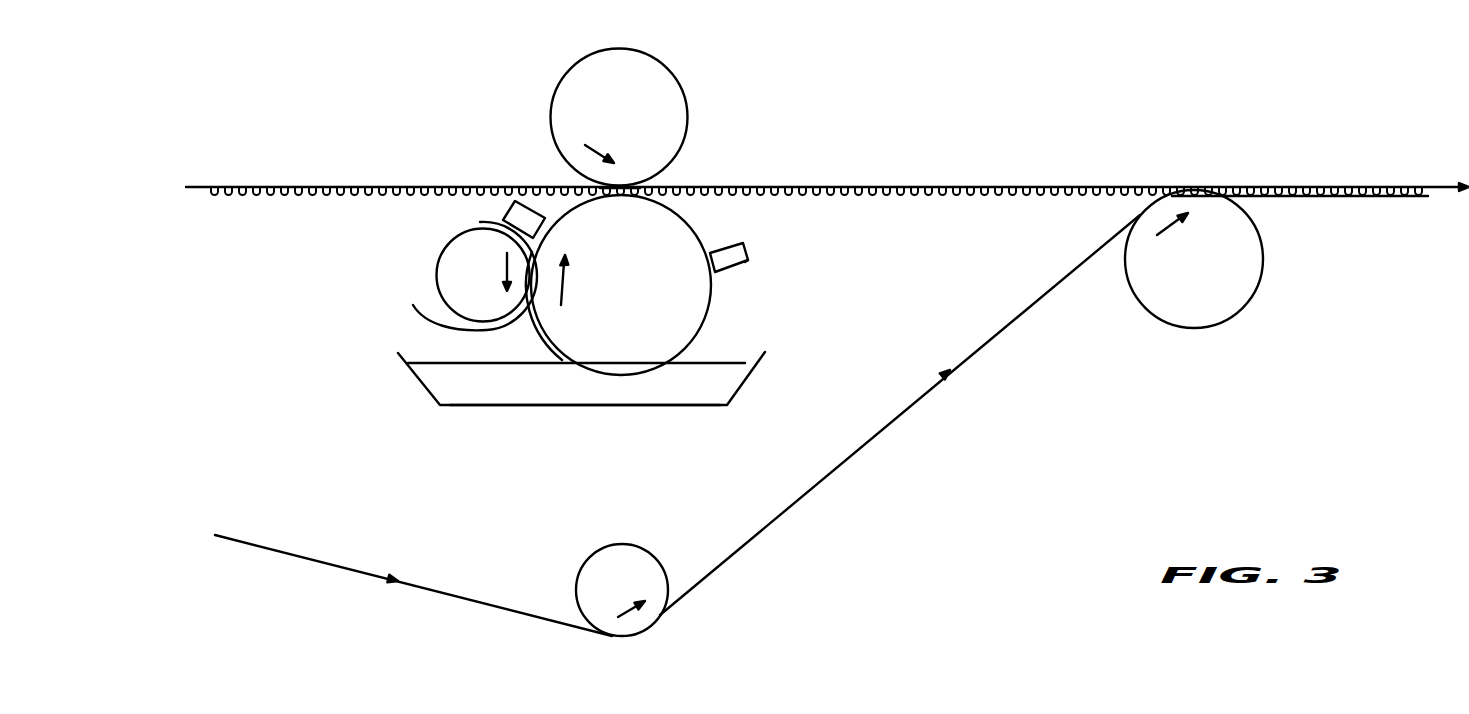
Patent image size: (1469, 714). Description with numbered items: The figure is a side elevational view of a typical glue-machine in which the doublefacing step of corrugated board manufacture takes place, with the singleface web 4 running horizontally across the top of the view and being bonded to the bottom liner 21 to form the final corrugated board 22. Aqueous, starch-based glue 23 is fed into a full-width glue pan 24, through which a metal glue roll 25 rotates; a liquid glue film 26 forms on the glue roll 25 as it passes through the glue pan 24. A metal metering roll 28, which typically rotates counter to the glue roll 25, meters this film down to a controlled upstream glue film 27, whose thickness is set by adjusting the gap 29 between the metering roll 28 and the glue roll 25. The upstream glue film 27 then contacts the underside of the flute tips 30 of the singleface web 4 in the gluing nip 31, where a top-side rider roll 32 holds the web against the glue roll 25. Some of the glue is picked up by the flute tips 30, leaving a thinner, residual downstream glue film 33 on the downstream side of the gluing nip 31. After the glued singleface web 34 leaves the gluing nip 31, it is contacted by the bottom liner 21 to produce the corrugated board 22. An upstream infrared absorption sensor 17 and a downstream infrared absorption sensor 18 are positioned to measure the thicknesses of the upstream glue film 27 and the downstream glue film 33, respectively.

The singleface web 4 is at (316, 186).
The flute tips 30 is at (290, 194).
The glued singleface web 34 is at (865, 196).
The top-side rider roll 32 is at (655, 80).
The gluing nip 31 is at (645, 190).
The glue roll 25 is at (683, 322).
The liquid glue film 26 is at (535, 330).
The upstream infrared absorption sensor 17 is at (500, 203).
The upstream glue film 27 is at (500, 230).
The metering roll 28 is at (450, 272).
The gap 29 is at (413, 305).
The glue 23 is at (428, 363).
The glue pan 24 is at (486, 406).
The downstream glue film 33 is at (703, 245).
The downstream infrared absorption sensor 18 is at (748, 260).
The bottom liner 21 is at (848, 465).
The corrugated board 22 is at (1330, 187).